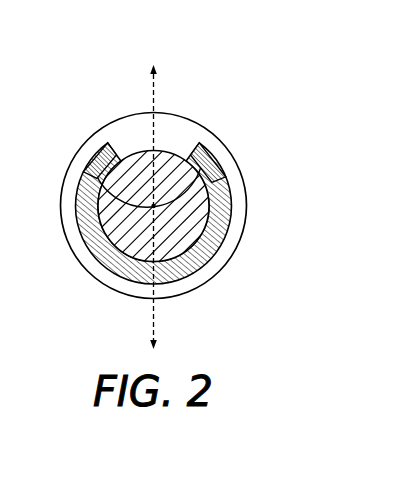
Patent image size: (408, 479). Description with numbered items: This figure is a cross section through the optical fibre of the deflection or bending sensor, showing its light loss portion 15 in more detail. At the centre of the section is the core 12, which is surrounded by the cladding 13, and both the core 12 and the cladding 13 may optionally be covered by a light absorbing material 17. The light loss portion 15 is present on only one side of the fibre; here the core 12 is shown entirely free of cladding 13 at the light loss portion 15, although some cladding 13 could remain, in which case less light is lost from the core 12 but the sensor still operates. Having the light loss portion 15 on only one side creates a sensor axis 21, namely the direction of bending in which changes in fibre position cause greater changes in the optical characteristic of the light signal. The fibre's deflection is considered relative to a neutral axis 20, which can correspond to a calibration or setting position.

The light loss portion 15 is at (111, 119).
The light absorbing material 17 is at (218, 258).
The core 12 is at (114, 237).
The neutral axis 20 is at (90, 160).
The cladding 13 is at (216, 152).
The sensor axis 21 is at (154, 318).